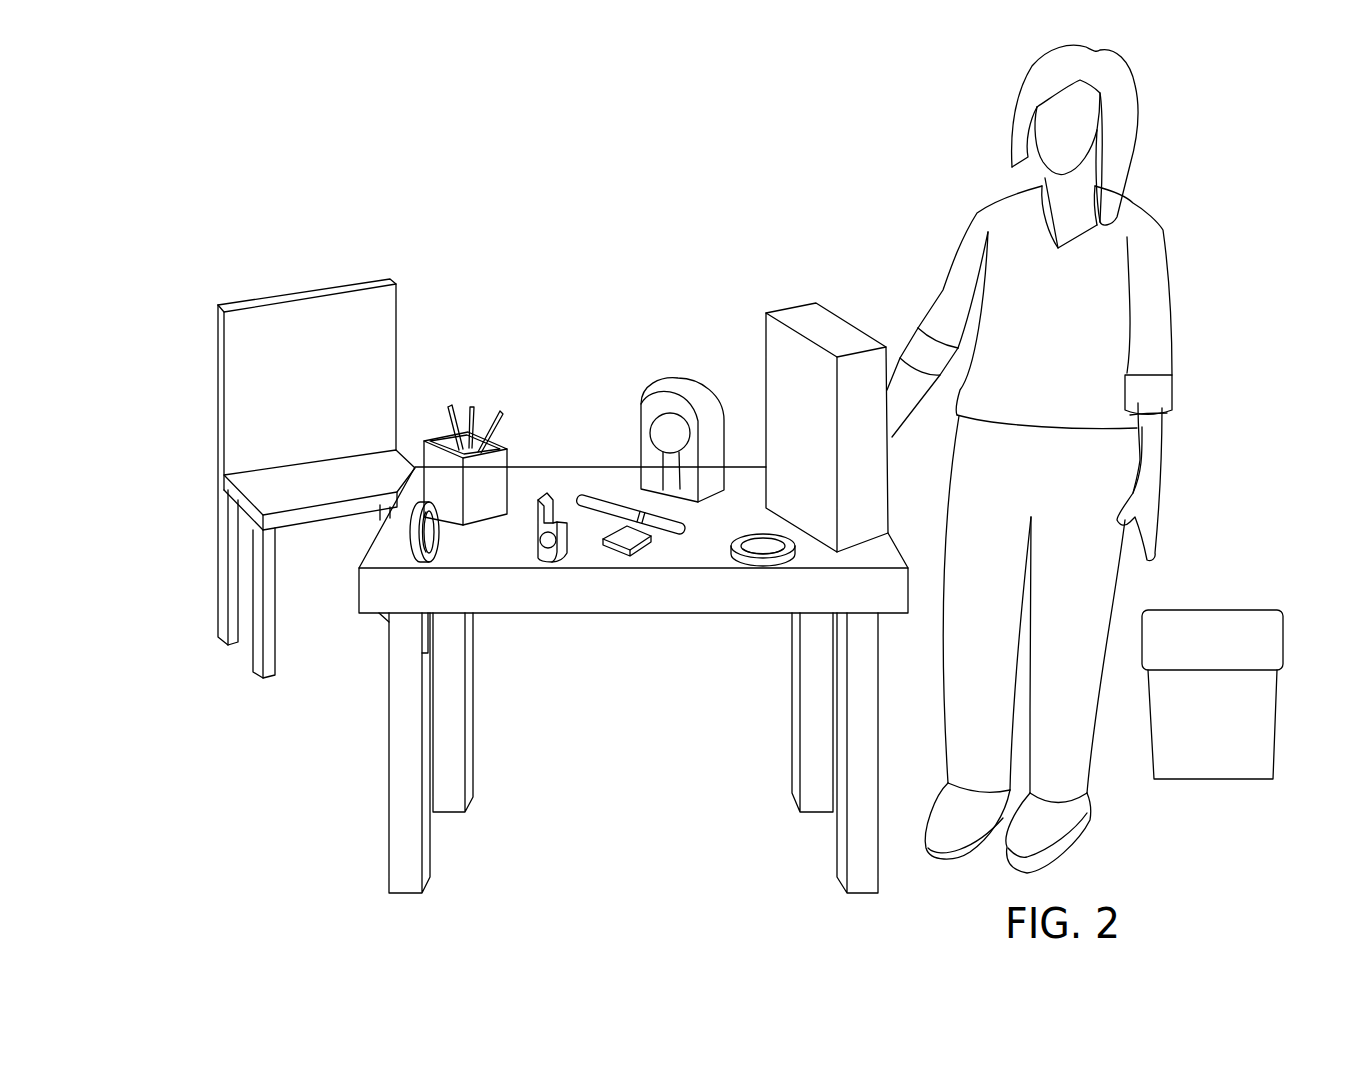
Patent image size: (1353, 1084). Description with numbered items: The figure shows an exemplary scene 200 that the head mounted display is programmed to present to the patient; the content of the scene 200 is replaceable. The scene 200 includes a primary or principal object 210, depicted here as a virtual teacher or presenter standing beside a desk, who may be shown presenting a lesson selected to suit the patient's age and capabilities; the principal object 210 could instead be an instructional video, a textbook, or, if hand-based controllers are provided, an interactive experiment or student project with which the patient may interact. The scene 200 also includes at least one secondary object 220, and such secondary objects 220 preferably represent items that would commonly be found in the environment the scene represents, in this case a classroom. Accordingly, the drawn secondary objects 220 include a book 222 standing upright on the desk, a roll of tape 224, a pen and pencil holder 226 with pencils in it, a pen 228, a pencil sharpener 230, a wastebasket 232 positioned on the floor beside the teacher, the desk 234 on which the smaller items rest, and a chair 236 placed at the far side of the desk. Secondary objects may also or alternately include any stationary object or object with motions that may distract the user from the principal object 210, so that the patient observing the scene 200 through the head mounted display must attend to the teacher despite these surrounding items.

The scene 200 is at (186, 146).
The principal object 210 is at (1037, 70).
The secondary object 220 is at (1203, 779).
The wastebasket 232 is at (1212, 694).
The book 222 is at (802, 327).
The roll of tape 224 is at (410, 525).
The pen and pencil holder 226 is at (484, 410).
The pen 228 is at (596, 490).
The pencil sharpener 230 is at (689, 387).
The desk 234 is at (388, 852).
The chair 236 is at (277, 347).